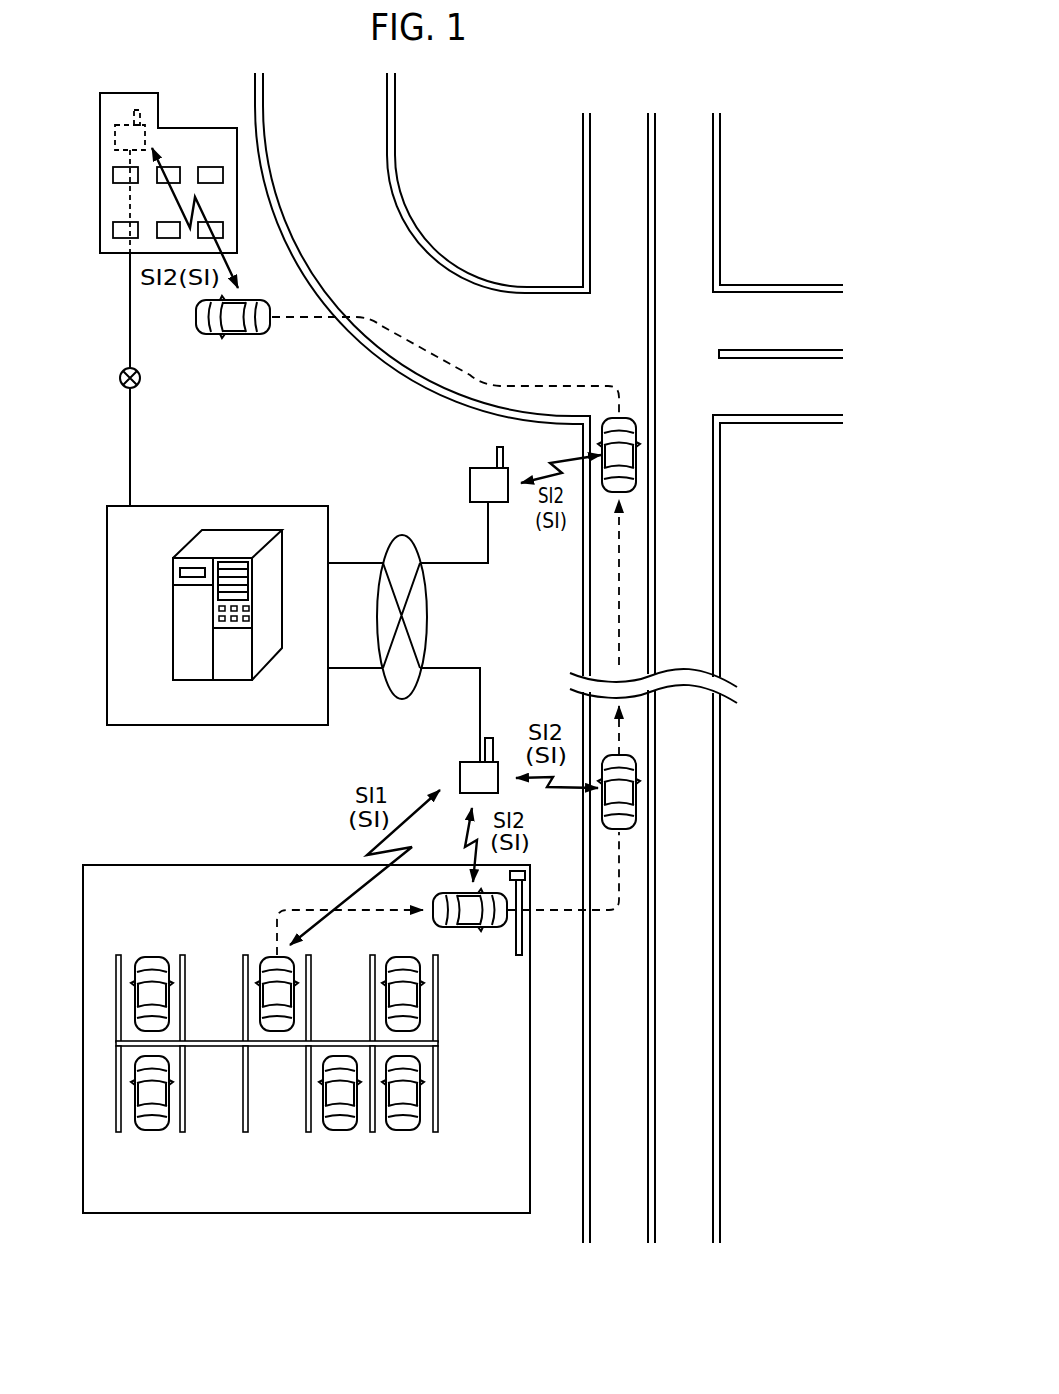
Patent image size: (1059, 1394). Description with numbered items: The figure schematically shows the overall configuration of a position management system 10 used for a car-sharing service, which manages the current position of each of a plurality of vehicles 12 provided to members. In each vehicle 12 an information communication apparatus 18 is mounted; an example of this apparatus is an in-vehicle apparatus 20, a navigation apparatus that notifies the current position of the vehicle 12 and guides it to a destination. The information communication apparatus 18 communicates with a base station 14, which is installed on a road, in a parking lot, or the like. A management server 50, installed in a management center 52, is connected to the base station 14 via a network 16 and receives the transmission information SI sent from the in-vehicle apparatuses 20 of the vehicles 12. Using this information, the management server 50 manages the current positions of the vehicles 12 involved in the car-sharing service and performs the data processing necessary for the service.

The position management system 10 is at (581, 61).
The vehicle 12 is at (243, 335).
The base station 14 is at (125, 115).
The network 16 is at (142, 378).
The information communication apparatus 18 is at (306, 1039).
The in-vehicle apparatus 20 is at (277, 958).
The management server 50 is at (185, 548).
The management center 52 is at (165, 505).